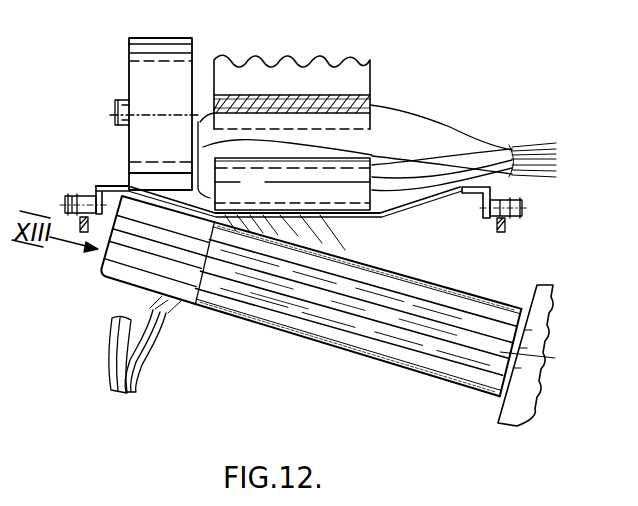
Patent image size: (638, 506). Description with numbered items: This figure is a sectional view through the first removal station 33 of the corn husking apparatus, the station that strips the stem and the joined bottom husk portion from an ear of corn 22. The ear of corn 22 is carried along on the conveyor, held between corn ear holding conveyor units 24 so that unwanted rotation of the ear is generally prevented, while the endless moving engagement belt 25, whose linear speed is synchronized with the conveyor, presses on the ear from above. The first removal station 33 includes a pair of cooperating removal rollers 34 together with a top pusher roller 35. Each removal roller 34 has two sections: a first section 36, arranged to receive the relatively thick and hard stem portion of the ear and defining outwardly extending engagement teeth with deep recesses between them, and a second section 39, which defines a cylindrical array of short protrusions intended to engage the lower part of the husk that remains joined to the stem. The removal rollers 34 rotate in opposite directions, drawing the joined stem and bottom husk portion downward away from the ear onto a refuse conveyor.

The ear of corn 22 is at (430, 147).
The corn ear holding conveyor unit 24 is at (436, 200).
The engagement belt 25 is at (353, 82).
The first removal station 33 is at (118, 48).
The removal roller 34 is at (276, 324).
The top pusher roller 35 is at (148, 134).
The first section 36 is at (122, 277).
The second section 39 is at (353, 342).